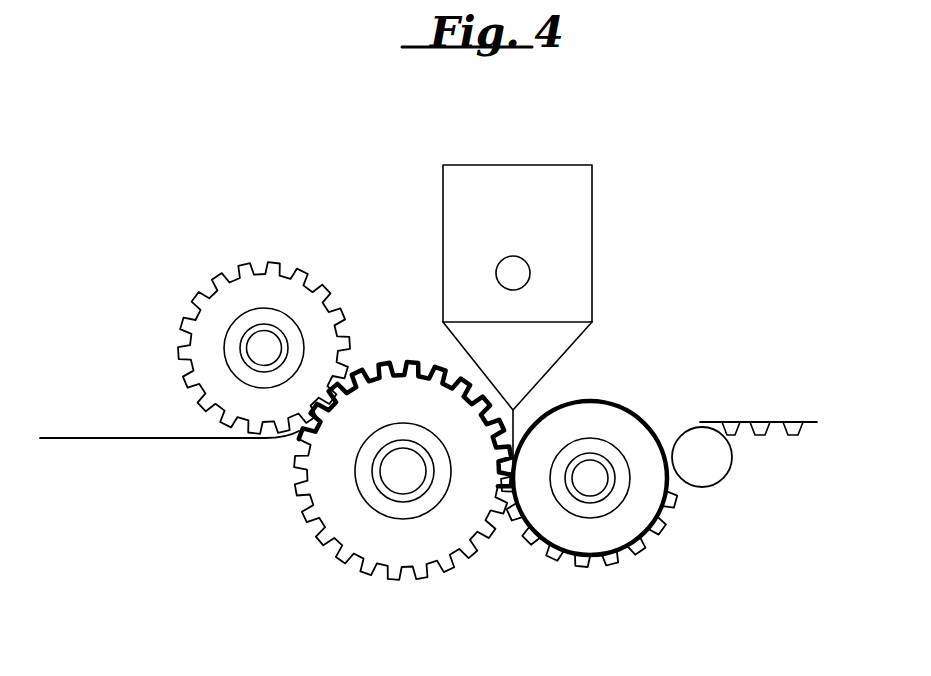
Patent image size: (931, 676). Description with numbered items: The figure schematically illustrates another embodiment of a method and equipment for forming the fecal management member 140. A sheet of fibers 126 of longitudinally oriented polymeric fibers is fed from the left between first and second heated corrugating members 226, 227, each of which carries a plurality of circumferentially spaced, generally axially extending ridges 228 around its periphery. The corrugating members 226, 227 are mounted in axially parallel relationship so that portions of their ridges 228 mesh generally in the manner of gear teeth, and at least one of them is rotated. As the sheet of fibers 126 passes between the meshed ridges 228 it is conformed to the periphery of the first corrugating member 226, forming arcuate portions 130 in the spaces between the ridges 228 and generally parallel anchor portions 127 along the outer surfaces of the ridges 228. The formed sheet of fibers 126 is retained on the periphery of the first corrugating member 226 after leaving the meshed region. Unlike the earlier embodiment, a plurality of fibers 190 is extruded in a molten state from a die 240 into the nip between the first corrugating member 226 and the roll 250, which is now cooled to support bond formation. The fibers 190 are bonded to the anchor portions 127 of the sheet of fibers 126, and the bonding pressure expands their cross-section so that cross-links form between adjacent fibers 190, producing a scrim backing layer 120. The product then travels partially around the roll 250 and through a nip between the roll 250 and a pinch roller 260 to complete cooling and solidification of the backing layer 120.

The backing layer 120 is at (597, 401).
The plurality of fibers 190 is at (530, 427).
The sheet of fibers 126 is at (107, 428).
The anchor portions 127 is at (438, 365).
The arcuate portions 130 is at (453, 380).
The fecal management member 140 is at (768, 412).
The first corrugating member 226 is at (377, 543).
The second corrugating member 227 is at (218, 310).
The ridges 228 is at (352, 375).
The die 240 is at (578, 253).
The cooling roll 250 is at (577, 535).
The pinch roller 260 is at (715, 458).